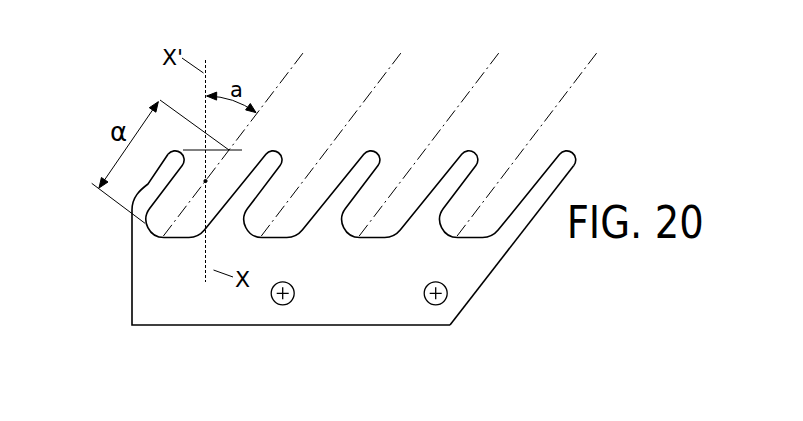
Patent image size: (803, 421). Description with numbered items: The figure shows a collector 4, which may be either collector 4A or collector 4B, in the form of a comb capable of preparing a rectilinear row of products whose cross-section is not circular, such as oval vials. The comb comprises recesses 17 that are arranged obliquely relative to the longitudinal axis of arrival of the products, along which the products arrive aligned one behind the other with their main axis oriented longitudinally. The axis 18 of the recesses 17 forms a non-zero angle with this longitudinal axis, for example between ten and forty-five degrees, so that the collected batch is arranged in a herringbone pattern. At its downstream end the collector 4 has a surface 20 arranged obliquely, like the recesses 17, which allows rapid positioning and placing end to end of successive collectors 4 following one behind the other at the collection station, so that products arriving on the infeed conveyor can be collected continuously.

The collector 4 is at (317, 205).
The collector 4A is at (317, 205).
The collector 4B is at (317, 205).
The recesses 17 is at (286, 180).
The axis of the recesses 18 is at (287, 73).
The surface 20 is at (495, 265).